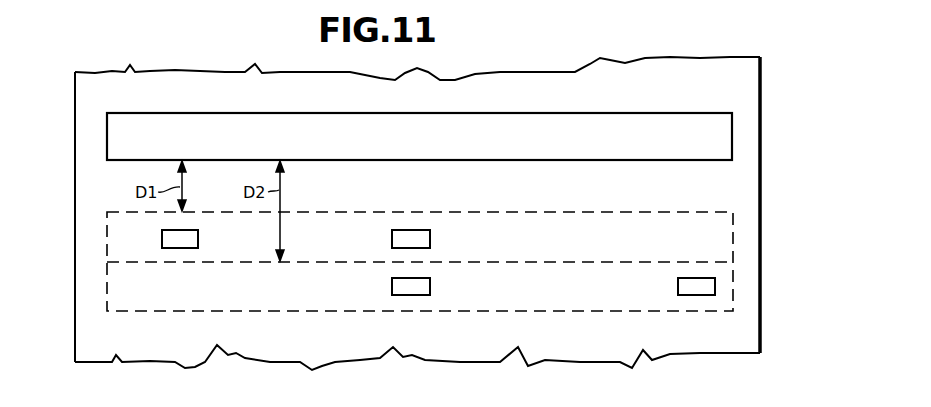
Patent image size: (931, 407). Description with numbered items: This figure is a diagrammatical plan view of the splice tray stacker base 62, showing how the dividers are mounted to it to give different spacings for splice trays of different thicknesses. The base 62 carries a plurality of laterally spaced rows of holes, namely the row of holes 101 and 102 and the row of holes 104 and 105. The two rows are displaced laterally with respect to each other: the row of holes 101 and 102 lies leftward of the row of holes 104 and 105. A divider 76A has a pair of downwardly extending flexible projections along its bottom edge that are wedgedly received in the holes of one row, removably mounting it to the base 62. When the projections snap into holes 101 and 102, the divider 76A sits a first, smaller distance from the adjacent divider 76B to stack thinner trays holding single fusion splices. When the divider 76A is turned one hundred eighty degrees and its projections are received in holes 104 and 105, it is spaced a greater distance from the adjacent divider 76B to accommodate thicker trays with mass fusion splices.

The splice tray stacker base 62 is at (761, 162).
The adjacent divider 76B is at (576, 116).
The divider 76A is at (736, 241).
The hole 101 is at (170, 238).
The hole 102 is at (415, 231).
The hole 104 is at (415, 296).
The hole 105 is at (705, 296).